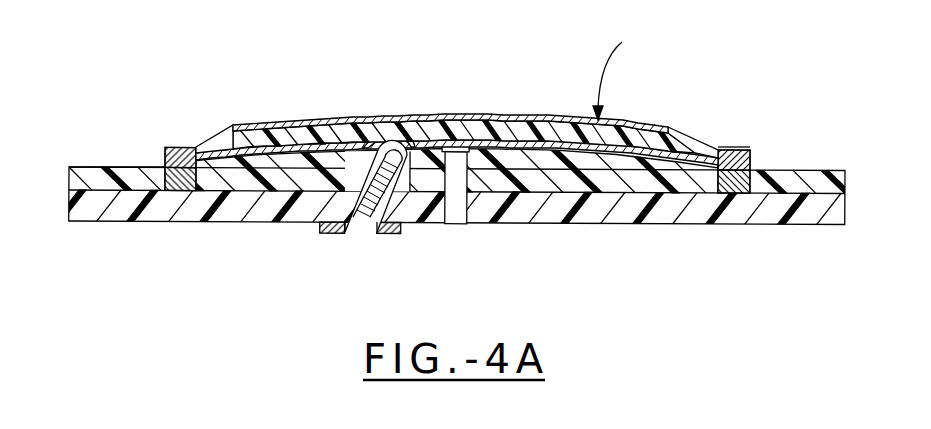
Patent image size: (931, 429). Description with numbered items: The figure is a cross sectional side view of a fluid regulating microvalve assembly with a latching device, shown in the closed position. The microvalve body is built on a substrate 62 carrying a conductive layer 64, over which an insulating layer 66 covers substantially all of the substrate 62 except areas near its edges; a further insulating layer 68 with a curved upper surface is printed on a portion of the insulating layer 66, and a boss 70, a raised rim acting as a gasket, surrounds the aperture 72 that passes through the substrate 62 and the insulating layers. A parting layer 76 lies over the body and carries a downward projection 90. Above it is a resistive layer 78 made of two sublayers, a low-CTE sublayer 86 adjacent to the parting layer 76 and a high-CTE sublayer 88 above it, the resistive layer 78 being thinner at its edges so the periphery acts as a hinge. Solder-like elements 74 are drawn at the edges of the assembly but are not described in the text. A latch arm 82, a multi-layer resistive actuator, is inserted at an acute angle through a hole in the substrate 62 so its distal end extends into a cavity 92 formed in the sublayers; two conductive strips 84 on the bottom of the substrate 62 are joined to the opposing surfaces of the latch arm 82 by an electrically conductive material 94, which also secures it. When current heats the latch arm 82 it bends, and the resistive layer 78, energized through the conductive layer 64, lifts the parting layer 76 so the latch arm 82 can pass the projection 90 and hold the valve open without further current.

The substrate 62 is at (98, 222).
The conductive layer 64 is at (180, 185).
The insulating layer 66 is at (96, 167).
The insulating layer 68 is at (232, 135).
The boss 70 is at (478, 136).
The aperture 72 is at (455, 222).
The solder joint 74 is at (185, 147).
The parting layer 76 is at (700, 140).
The resistive layer 78 is at (624, 74).
The latch arm 82 is at (357, 232).
The conductive strips 84 is at (332, 232).
The low-CTE sublayer 86 is at (712, 150).
The high-CTE sublayer 88 is at (553, 120).
The downward projection 90 is at (375, 130).
The cavity 92 is at (360, 140).
The electrically conductive material 94 is at (348, 230).